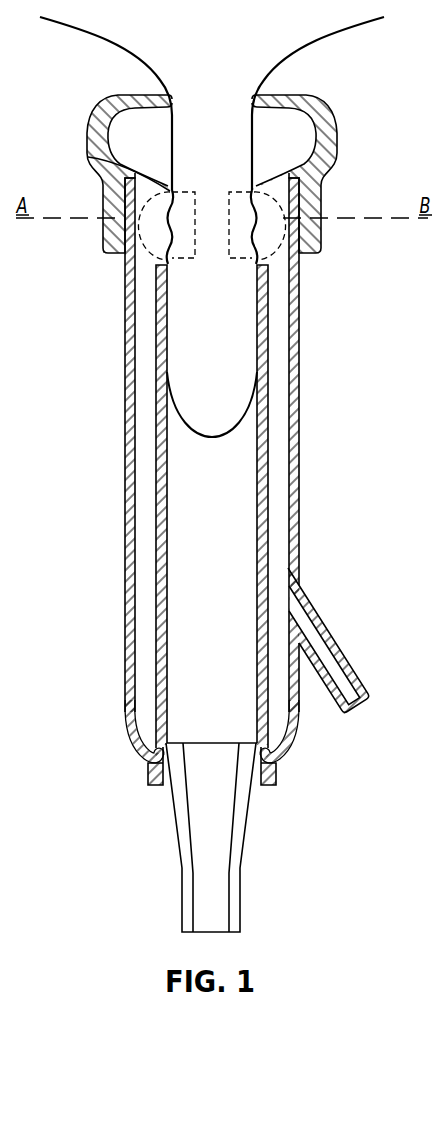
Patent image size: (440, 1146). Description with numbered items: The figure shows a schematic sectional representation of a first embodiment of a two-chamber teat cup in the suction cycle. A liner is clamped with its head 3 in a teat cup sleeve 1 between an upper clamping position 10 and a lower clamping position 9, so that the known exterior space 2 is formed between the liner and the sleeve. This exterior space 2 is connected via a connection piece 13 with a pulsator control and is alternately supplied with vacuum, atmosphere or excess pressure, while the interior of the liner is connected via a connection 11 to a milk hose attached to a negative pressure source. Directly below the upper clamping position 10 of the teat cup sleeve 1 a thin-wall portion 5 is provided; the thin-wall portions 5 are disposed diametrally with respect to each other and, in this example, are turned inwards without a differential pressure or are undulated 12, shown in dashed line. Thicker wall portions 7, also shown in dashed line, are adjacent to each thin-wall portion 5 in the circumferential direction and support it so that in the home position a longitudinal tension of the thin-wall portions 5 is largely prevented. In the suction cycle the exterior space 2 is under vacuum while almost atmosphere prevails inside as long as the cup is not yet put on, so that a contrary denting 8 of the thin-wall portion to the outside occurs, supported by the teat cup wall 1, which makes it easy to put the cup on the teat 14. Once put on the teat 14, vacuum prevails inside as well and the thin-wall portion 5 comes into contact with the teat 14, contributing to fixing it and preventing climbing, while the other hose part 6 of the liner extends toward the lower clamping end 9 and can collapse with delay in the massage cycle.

The teat cup sleeve 1 is at (300, 357).
The exterior space 2 is at (280, 417).
The head 3 is at (332, 122).
The thin-wall portion 5 is at (167, 232).
The hose part 6 is at (157, 463).
The thicker wall portion 7 is at (205, 205).
The contrary denting 8 is at (117, 196).
The lower clamping position 9 is at (148, 762).
The upper clamping position 10 is at (88, 157).
The connection 11 is at (241, 827).
The undulated portion 12 is at (258, 203).
The connection piece 13 is at (335, 628).
The teat 14 is at (221, 316).